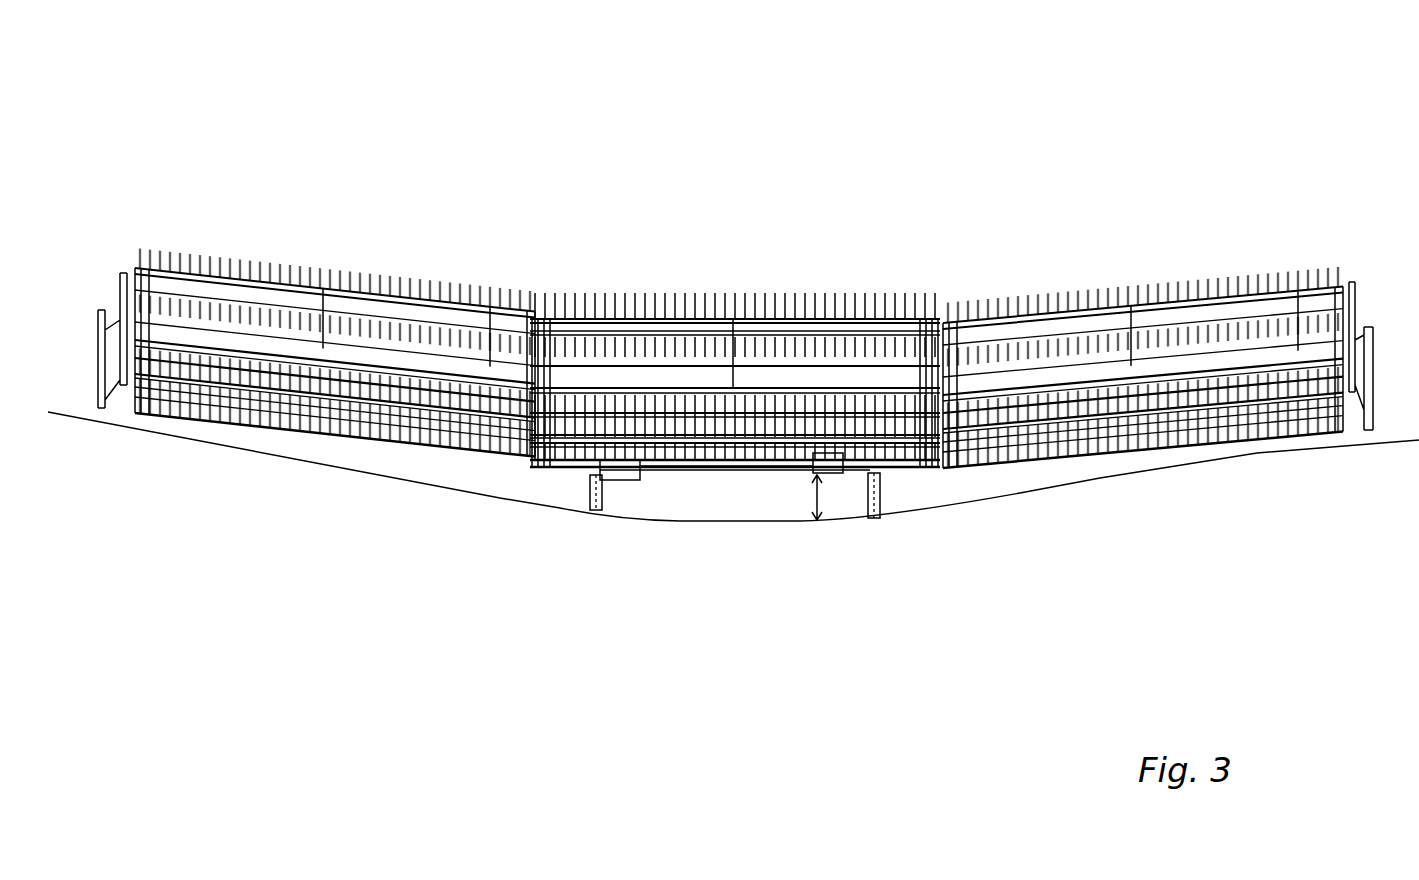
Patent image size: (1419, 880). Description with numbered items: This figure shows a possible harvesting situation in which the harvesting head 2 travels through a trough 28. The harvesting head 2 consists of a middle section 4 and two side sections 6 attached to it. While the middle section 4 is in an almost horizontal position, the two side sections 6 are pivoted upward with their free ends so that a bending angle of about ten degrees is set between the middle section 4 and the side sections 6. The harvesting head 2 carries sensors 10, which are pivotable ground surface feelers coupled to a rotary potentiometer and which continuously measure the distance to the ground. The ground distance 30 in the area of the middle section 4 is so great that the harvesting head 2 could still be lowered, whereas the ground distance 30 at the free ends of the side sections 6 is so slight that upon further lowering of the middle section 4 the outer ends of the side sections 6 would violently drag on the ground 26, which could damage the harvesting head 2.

The harvesting head 2 is at (483, 117).
The middle section 4 is at (720, 236).
The side sections 6 is at (316, 222).
The sensors 10 is at (597, 498).
The ground 26 is at (237, 438).
The trough 28 is at (723, 523).
The ground distance 30 is at (823, 502).